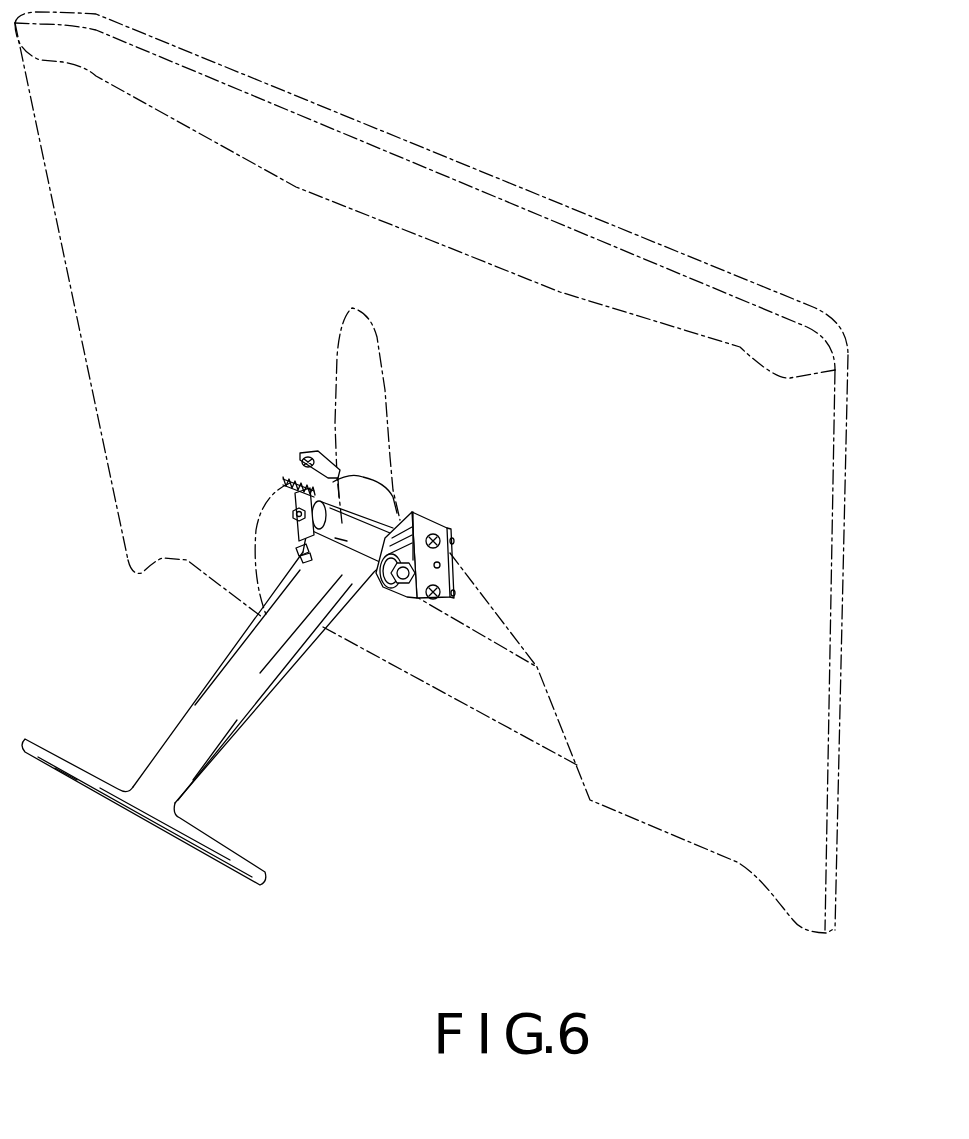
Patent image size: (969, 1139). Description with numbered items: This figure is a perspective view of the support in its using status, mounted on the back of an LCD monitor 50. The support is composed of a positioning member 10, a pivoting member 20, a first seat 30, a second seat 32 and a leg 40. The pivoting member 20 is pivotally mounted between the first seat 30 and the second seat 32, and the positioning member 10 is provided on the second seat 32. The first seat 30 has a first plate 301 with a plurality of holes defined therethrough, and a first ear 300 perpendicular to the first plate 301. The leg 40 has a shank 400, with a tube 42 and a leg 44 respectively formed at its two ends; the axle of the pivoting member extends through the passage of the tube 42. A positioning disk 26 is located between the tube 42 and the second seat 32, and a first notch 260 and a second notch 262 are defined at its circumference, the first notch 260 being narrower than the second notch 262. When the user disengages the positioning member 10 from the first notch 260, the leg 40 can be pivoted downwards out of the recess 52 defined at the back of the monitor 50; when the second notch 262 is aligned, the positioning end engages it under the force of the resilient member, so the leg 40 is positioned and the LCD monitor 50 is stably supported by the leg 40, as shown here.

The positioning member 10 is at (288, 495).
The pivoting member 20 is at (413, 598).
The positioning disk 26 is at (301, 556).
The first seat 30 is at (443, 517).
The second seat 32 is at (326, 456).
The leg 40 is at (252, 725).
The tube 42 is at (365, 525).
The leg 44 is at (240, 858).
The LCD monitor 50 is at (642, 232).
The recess 52 is at (378, 376).
The first notch 260 is at (303, 546).
The second notch 262 is at (306, 466).
The first ear 300 is at (400, 587).
The first plate 301 is at (447, 553).
The shank 400 is at (207, 693).